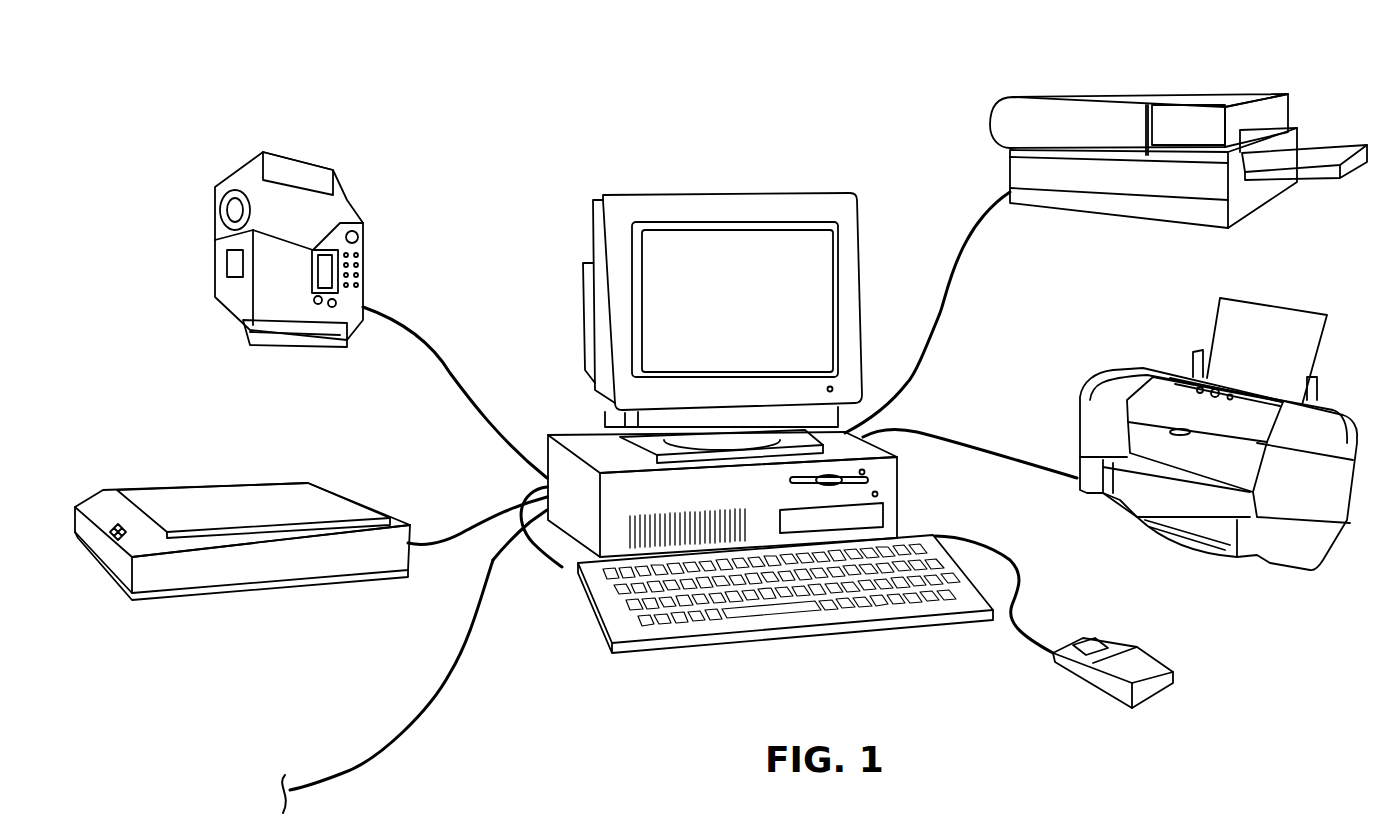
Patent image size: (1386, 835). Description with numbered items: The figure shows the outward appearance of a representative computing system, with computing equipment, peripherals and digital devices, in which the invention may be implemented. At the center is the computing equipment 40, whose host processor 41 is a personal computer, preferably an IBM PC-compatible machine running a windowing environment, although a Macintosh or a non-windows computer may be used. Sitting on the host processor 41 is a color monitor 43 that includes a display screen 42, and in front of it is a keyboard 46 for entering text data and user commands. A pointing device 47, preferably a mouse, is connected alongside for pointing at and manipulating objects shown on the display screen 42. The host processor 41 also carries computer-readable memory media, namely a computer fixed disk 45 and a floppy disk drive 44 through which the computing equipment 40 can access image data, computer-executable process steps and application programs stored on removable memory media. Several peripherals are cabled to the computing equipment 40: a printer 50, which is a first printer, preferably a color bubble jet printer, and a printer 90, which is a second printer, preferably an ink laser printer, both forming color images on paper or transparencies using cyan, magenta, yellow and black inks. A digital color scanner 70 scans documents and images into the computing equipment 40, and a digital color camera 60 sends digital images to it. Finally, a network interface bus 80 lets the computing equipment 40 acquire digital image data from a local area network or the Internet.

The computing equipment 40 is at (810, 162).
The host processor 41 is at (560, 433).
The display screen 42 is at (820, 320).
The color monitor 43 is at (697, 190).
The floppy disk drive 44 is at (857, 482).
The computer fixed disk 45 is at (878, 517).
The keyboard 46 is at (677, 630).
The pointing device 47 is at (1153, 700).
The printer 50 is at (1164, 354).
The digital color camera 60 is at (367, 220).
The digital color scanner 70 is at (297, 583).
The network interface bus 80 is at (350, 821).
The printer 90 is at (1067, 84).